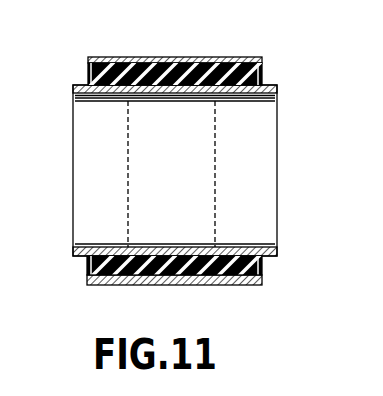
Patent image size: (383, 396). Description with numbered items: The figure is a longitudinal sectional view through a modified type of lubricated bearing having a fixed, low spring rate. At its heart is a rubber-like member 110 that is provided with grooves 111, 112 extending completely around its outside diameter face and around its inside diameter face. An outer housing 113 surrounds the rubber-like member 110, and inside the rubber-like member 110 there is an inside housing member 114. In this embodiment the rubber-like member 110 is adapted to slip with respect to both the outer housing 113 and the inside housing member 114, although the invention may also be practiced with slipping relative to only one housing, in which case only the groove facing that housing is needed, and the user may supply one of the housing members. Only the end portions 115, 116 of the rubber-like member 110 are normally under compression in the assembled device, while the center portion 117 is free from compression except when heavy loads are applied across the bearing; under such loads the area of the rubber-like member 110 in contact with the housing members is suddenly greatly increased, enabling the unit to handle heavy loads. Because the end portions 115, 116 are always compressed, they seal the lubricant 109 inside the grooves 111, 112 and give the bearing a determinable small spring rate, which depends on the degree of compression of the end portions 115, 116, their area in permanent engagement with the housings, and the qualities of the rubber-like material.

The lubricant 109 is at (142, 278).
The rubber-like member 110 is at (235, 63).
The groove 111 is at (142, 66).
The groove 112 is at (197, 66).
The outer housing 113 is at (102, 59).
The inside housing member 114 is at (268, 89).
The end portion 115 is at (87, 260).
The end portion 116 is at (262, 270).
The center portion 117 is at (202, 274).